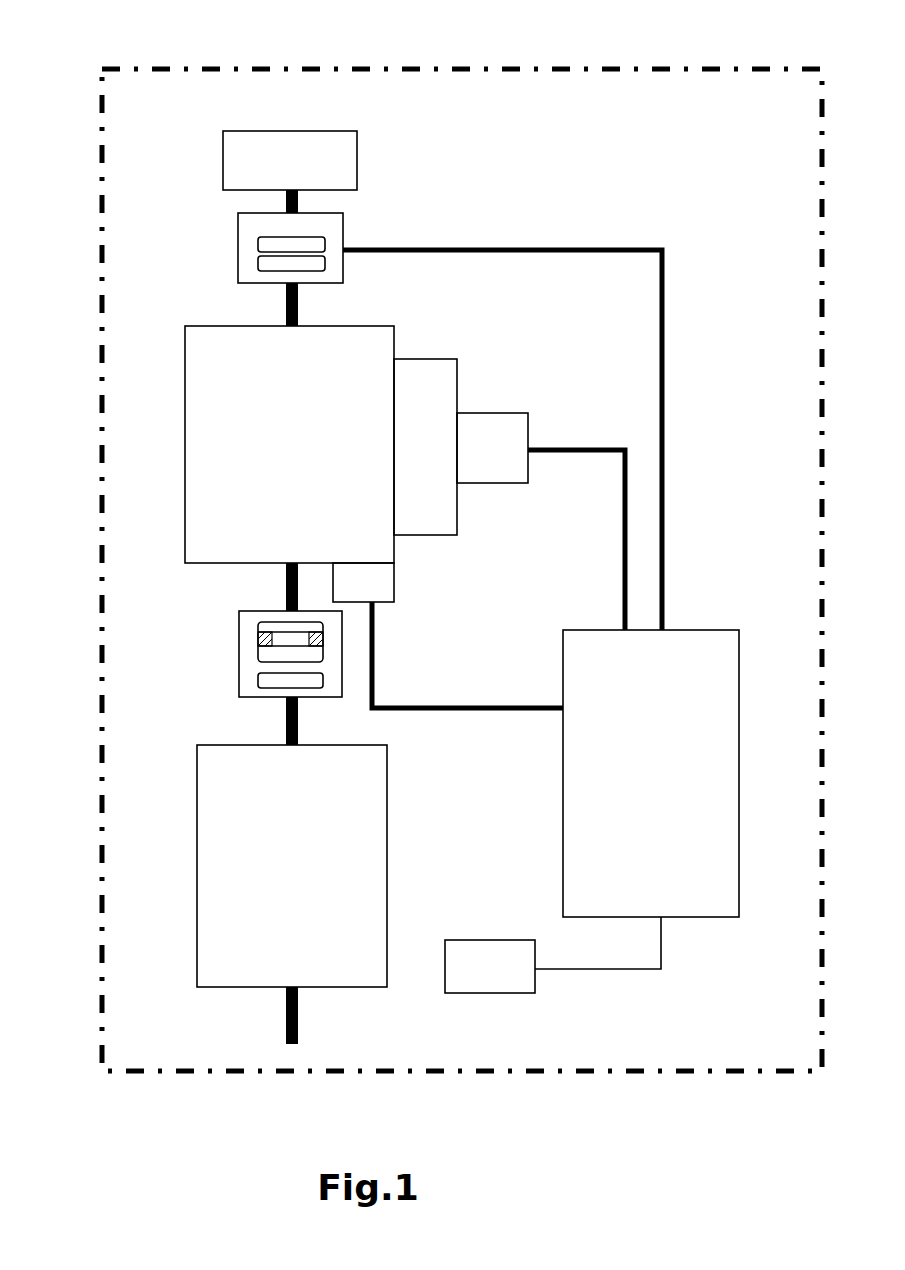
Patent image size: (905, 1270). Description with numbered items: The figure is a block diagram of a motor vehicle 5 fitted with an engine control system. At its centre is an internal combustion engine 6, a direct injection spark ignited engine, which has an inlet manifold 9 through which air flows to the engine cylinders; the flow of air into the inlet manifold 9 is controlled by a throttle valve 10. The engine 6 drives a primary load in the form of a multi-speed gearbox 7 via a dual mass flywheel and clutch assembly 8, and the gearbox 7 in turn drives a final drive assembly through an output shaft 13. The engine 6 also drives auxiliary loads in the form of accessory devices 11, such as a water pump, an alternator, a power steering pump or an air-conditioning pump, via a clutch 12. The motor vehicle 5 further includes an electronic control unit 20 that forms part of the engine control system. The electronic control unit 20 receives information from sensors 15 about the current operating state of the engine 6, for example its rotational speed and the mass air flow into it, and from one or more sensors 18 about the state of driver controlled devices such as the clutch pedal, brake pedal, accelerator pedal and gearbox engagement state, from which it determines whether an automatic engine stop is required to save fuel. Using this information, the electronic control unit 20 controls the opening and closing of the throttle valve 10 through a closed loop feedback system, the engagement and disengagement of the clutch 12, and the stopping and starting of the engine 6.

The motor vehicle 5 is at (150, 62).
The internal combustion engine 6 is at (289, 444).
The multi-speed gearbox 7 is at (292, 866).
The dual mass flywheel and clutch assembly 8 is at (238, 646).
The inlet manifold 9 is at (425, 447).
The throttle valve 10 is at (492, 448).
The accessory devices 11 is at (290, 160).
The clutch 12 is at (238, 246).
The output shaft 13 is at (287, 1022).
The sensors 15 is at (363, 582).
The sensors 18 is at (490, 966).
The electronic control unit 20 is at (651, 773).